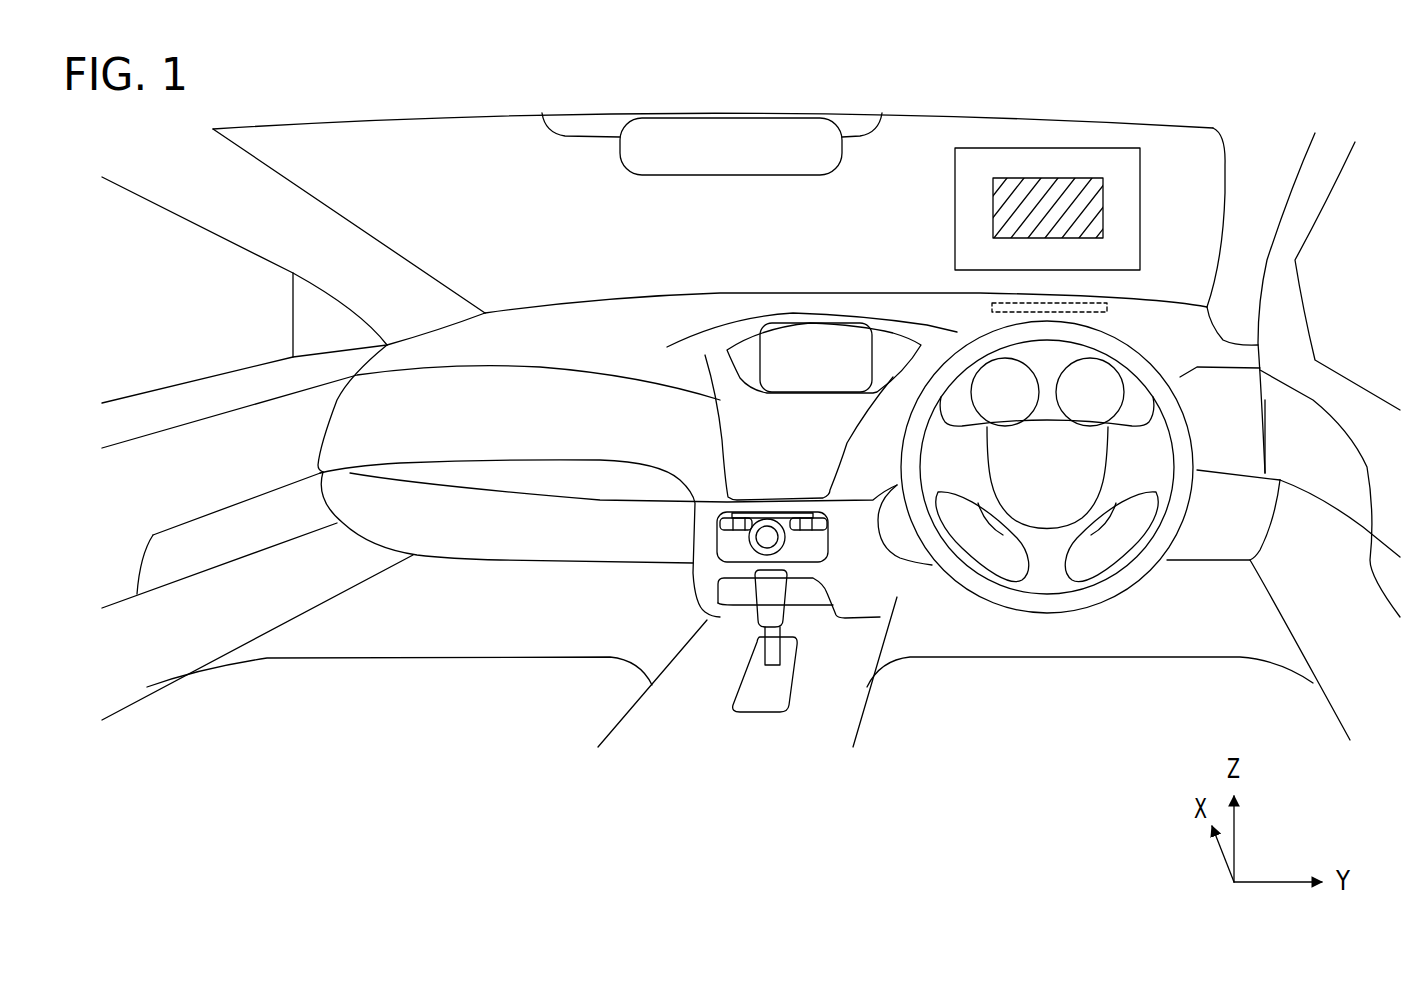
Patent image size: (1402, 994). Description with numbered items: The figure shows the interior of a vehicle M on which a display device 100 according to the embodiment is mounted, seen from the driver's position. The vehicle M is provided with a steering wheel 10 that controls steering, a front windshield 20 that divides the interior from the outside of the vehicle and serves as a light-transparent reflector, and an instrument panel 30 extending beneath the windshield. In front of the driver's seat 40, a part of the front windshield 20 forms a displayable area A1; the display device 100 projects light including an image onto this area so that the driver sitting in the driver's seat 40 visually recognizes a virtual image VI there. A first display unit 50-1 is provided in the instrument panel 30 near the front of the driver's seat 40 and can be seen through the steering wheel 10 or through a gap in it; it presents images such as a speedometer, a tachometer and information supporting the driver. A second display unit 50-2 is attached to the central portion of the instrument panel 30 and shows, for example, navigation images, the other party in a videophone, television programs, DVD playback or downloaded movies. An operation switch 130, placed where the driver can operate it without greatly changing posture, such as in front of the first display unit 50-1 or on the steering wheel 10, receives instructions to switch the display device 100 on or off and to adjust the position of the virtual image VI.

The steering wheel 10 is at (1135, 586).
The front windshield 20 is at (827, 245).
The instrument panel 30 is at (659, 338).
The driver's seat 40 is at (1109, 722).
The first display unit 50-1 is at (1003, 386).
The second display unit 50-2 is at (845, 375).
The display device 100 is at (1107, 306).
The operation switch 130 is at (1132, 420).
The displayable area A1 is at (955, 171).
The virtual image VI is at (993, 218).
The vehicle M is at (600, 622).